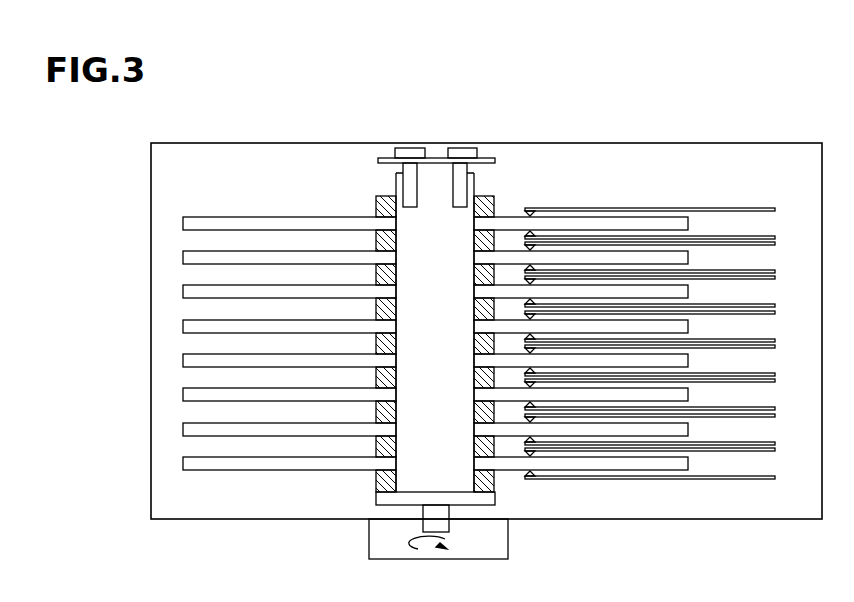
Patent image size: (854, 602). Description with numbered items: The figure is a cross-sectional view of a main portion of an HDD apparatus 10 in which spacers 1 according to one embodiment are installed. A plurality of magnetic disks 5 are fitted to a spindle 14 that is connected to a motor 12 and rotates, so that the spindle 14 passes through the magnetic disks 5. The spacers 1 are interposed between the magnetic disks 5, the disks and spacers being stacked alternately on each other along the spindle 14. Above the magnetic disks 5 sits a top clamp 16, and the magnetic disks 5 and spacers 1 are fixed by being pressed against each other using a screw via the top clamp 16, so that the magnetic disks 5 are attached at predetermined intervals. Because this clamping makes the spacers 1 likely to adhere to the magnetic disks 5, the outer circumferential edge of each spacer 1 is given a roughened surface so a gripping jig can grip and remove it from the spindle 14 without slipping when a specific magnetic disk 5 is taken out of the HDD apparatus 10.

The spacer 1 is at (386, 290).
The magnetic disk 5 is at (308, 297).
The HDD apparatus 10 is at (788, 138).
The motor 12 is at (492, 541).
The spindle 14 is at (437, 208).
The top clamp 16 is at (429, 173).